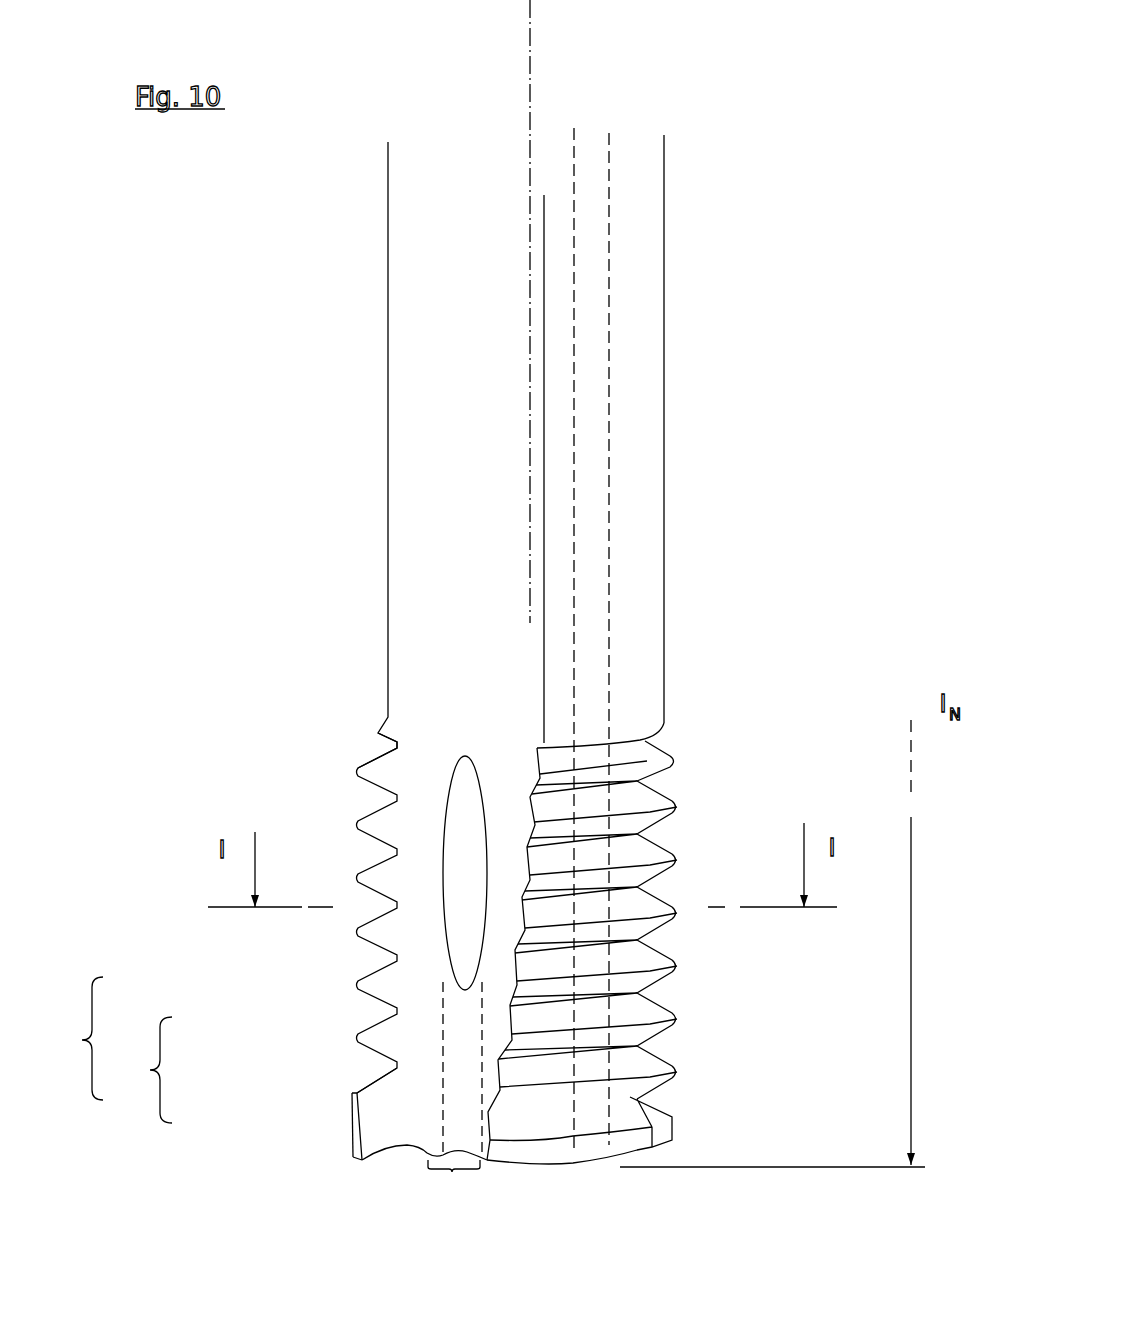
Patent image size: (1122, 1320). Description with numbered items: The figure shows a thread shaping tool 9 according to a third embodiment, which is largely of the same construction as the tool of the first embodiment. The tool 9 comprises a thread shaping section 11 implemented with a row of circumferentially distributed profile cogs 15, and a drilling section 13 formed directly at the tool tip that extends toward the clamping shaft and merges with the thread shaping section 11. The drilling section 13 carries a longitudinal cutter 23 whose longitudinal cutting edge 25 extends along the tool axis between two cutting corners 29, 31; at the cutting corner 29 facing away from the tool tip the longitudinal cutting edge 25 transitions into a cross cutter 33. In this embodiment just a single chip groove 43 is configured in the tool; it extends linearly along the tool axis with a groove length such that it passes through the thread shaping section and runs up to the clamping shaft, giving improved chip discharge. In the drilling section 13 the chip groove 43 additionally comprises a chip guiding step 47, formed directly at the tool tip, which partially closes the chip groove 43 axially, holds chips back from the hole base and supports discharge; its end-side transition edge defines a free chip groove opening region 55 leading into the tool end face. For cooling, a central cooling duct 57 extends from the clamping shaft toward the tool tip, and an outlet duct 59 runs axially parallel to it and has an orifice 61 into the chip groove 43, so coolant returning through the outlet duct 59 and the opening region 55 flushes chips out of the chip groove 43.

The thread shaping tool 9 is at (665, 180).
The central cooling duct 57 is at (609, 228).
The chip groove 43 is at (463, 621).
The orifice 61 is at (467, 755).
The thread shaping section 11 is at (357, 812).
The profile cogs 15 is at (370, 758).
The drilling section 13 is at (74, 1038).
The longitudinal cutter 23 is at (141, 1070).
The cross cutter 33 is at (362, 1075).
The cutting corner 29 is at (357, 1093).
The longitudinal cutting edge 25 is at (352, 1117).
The cutting corner 31 is at (353, 1157).
The chip guiding step 47 is at (403, 1160).
The outlet duct 59 is at (444, 1100).
The free chip groove opening region 55 is at (452, 1170).